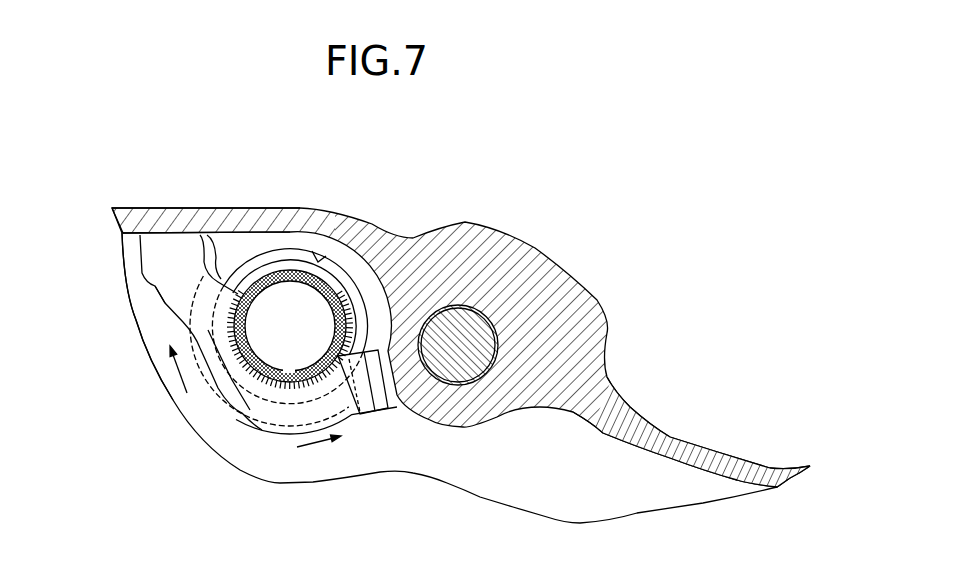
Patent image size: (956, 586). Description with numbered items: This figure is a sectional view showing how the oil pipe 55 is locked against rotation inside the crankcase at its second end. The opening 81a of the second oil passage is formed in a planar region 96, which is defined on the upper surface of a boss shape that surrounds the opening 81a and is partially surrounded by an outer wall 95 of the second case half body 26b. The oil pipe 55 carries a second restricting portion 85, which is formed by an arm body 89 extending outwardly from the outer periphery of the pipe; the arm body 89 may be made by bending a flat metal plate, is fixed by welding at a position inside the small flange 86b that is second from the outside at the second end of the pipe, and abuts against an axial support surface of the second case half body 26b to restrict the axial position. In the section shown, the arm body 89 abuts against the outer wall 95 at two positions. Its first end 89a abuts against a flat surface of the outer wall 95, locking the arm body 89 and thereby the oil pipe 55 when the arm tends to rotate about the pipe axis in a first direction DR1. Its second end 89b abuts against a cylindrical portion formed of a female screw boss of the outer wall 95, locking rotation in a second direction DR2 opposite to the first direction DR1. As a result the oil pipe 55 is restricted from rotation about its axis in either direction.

The second case half body 26b is at (628, 420).
The oil pipe 55 is at (265, 287).
The opening 81a is at (325, 258).
The second restricting portion 85 is at (266, 437).
The small flange 86b is at (413, 240).
The arm body 89 is at (163, 286).
The first end 89a is at (168, 236).
The second end 89b is at (383, 370).
The outer wall 95 is at (290, 215).
The planar region 96 is at (215, 382).
The first direction DR1 is at (177, 380).
The second direction DR2 is at (318, 446).